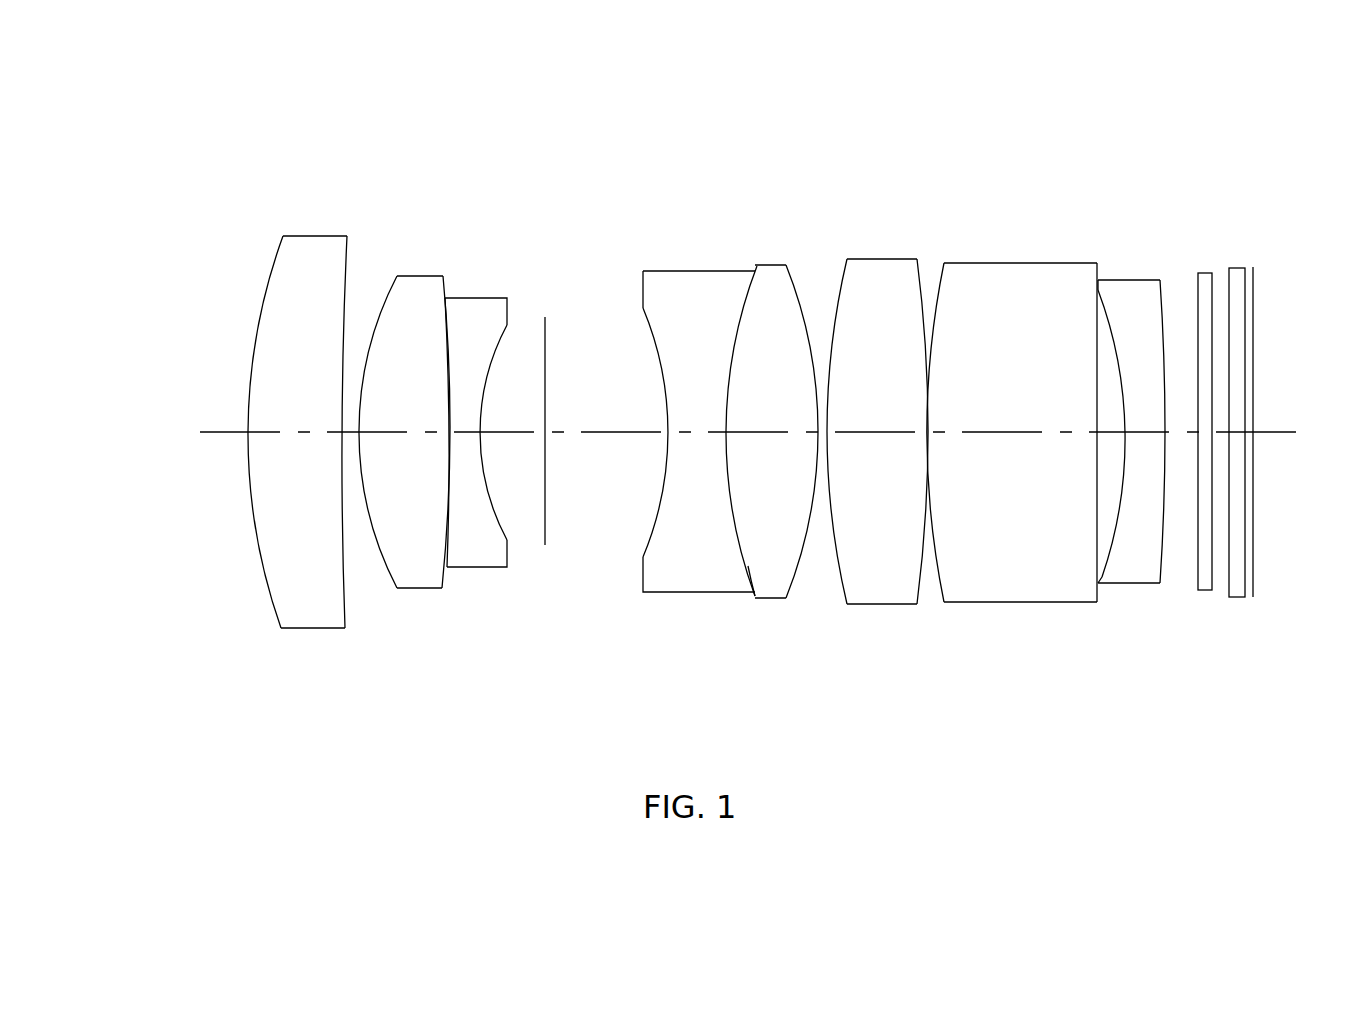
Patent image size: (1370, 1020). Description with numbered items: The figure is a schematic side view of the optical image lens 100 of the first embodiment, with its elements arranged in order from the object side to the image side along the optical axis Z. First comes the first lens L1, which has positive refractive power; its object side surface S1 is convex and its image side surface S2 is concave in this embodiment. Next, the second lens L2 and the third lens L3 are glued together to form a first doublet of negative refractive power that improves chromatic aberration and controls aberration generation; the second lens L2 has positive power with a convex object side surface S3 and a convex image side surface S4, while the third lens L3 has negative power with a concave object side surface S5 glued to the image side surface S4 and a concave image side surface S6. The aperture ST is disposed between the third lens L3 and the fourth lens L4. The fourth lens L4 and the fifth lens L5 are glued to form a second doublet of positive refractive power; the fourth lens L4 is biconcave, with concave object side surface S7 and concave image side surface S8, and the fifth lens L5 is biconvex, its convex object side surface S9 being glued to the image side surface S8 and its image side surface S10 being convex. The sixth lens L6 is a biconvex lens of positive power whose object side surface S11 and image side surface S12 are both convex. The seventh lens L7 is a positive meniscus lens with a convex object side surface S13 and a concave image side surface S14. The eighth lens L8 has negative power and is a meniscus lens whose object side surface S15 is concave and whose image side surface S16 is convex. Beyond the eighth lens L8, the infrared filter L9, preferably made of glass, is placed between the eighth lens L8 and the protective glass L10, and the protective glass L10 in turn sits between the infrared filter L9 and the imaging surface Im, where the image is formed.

The optical image lens 100 is at (264, 150).
The optical axis Z is at (734, 435).
The first lens L1 is at (314, 257).
The second lens L2 is at (418, 298).
The third lens L3 is at (493, 308).
The aperture ST is at (545, 317).
The fourth lens L4 is at (672, 303).
The fifth lens L5 is at (767, 302).
The sixth lens L6 is at (865, 303).
The seventh lens L7 is at (1007, 305).
The eighth lens L8 is at (1137, 308).
The infrared filter L9 is at (1198, 288).
The protective glass L10 is at (1235, 278).
The imaging surface Im is at (1253, 317).
The object side surface of the first lens S1 is at (273, 602).
The image side surface of the first lens S2 is at (345, 608).
The object side surface of the second lens S3 is at (387, 567).
The image side surface of the second lens S4 is at (438, 560).
The object side surface of the third lens S5 is at (448, 535).
The image side surface of the third lens S6 is at (498, 520).
The object side surface of the fourth lens S7 is at (650, 530).
The image side surface of the fourth lens S8 is at (735, 520).
The object side surface of the fifth lens S9 is at (747, 565).
The image side surface of the fifth lens S10 is at (792, 577).
The object side surface of the sixth lens S11 is at (838, 583).
The image side surface of the sixth lens S12 is at (920, 587).
The object side surface of the seventh lens S13 is at (937, 588).
The image side surface of the seventh lens S14 is at (1097, 553).
The object side surface of the eighth lens S15 is at (1108, 543).
The image side surface of the eighth lens S16 is at (1160, 563).